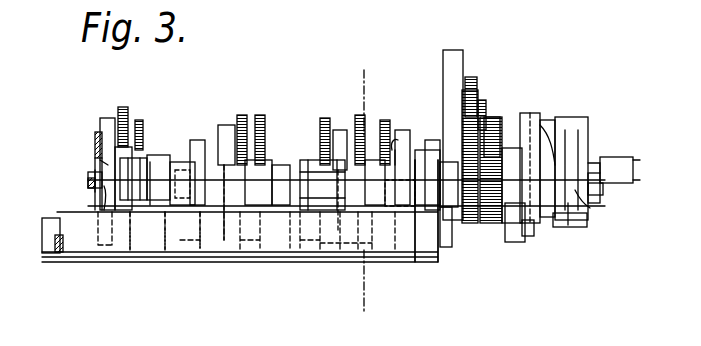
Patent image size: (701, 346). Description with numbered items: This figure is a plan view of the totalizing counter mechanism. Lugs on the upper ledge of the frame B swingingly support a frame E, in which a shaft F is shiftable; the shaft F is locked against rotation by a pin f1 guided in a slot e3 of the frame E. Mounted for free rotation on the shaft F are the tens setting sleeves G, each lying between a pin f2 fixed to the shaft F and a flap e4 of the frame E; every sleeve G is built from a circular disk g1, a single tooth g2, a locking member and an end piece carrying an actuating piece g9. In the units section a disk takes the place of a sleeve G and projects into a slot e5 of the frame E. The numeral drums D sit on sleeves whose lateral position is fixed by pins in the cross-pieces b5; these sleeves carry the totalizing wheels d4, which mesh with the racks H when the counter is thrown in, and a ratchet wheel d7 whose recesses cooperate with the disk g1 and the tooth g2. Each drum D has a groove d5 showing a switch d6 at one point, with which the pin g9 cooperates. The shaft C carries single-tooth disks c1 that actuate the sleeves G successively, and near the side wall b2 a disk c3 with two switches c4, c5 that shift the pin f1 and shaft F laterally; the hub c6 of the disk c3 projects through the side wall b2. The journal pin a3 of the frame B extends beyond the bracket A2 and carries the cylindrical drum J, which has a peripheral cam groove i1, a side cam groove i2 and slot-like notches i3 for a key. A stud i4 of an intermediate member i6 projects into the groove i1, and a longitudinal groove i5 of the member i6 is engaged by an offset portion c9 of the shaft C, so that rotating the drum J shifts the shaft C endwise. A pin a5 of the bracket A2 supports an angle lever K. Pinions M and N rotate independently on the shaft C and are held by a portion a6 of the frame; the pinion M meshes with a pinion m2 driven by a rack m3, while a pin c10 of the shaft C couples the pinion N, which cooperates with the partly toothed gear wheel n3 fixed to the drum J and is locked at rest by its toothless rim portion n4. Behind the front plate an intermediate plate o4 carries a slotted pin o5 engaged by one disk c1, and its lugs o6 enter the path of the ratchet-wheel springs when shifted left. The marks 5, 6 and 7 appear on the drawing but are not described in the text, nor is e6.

The frame E is at (130, 248).
The frame B is at (42, 243).
The shaft F is at (90, 181).
The pin f2 is at (106, 188).
The circular disk g1 is at (95, 174).
The position mark 6 is at (222, 164).
The position mark 7 is at (224, 182).
The section line 5 is at (365, 194).
The switch d6 is at (95, 150).
The totalizing wheels d4 is at (123, 110).
The ratchet wheel d7 is at (148, 100).
The single tooth g2 is at (150, 165).
The tens setting sleeves G is at (142, 185).
The disks c1 is at (182, 248).
The cross-pieces b5 is at (197, 140).
The groove d5 is at (242, 120).
The numeral drums D is at (108, 130).
The racks H is at (258, 162).
The slotted pin o5 is at (300, 250).
The flap e4 is at (108, 225).
The intermediate plate o4 is at (115, 255).
The lugs o6 is at (185, 250).
The actuating piece g9 is at (226, 240).
The pin f1 is at (396, 145).
The disk c3 is at (403, 130).
The hub c6 is at (420, 150).
The slot e3 is at (430, 155).
The switch c5 is at (406, 205).
The switch c4 is at (436, 205).
The slot e5 is at (418, 250).
The side wall b2 is at (438, 260).
The bracket e6 is at (447, 248).
The bracket A2 is at (456, 121).
The rack m3 is at (470, 80).
The pinion m2 is at (482, 105).
The pinion M is at (470, 225).
The pinion N is at (490, 225).
The portion of the frame a6 is at (490, 120).
The toothless rim portion n4 is at (510, 150).
The gear wheel n3 is at (530, 113).
The cam groove i2 is at (542, 190).
The pin c10 is at (572, 155).
The intermediate member i6 is at (591, 175).
The slot-like notches i3 is at (595, 165).
The offset portion c9 is at (612, 160).
The journal pin a3 is at (630, 170).
The longitudinal groove i5 is at (600, 192).
The stud i4 is at (578, 195).
The cylindrical drum J is at (570, 220).
The cam groove i1 is at (553, 218).
The pin a5 is at (530, 238).
The angle lever K is at (515, 242).